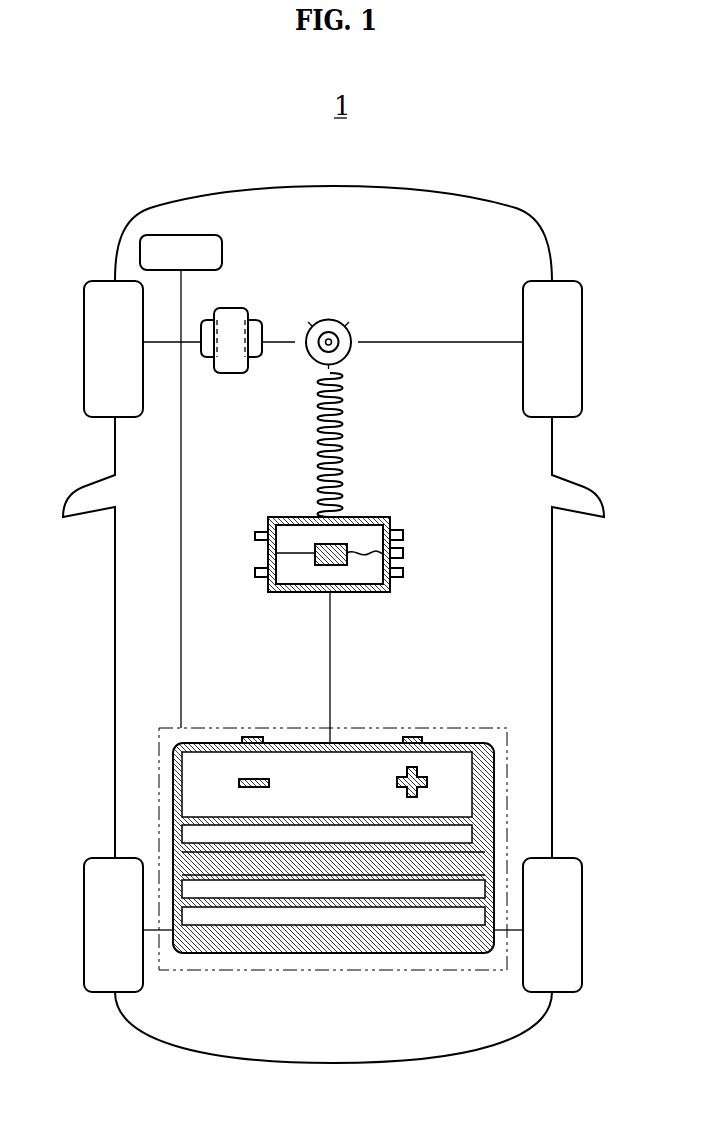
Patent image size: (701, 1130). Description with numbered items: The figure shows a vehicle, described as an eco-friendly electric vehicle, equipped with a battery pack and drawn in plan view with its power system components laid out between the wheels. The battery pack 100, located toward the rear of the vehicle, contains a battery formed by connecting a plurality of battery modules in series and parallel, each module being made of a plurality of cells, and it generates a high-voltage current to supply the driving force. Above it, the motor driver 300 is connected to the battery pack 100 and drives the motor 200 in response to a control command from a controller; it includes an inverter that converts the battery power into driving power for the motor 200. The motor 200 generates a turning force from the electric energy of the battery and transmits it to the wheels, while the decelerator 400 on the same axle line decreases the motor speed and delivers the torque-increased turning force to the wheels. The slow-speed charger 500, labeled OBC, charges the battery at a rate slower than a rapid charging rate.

The battery pack 100 is at (450, 743).
The motor 200 is at (328, 320).
The motor driver 300 is at (390, 518).
The decelerator 400 is at (231, 374).
The slow-speed charger 500 is at (222, 251).